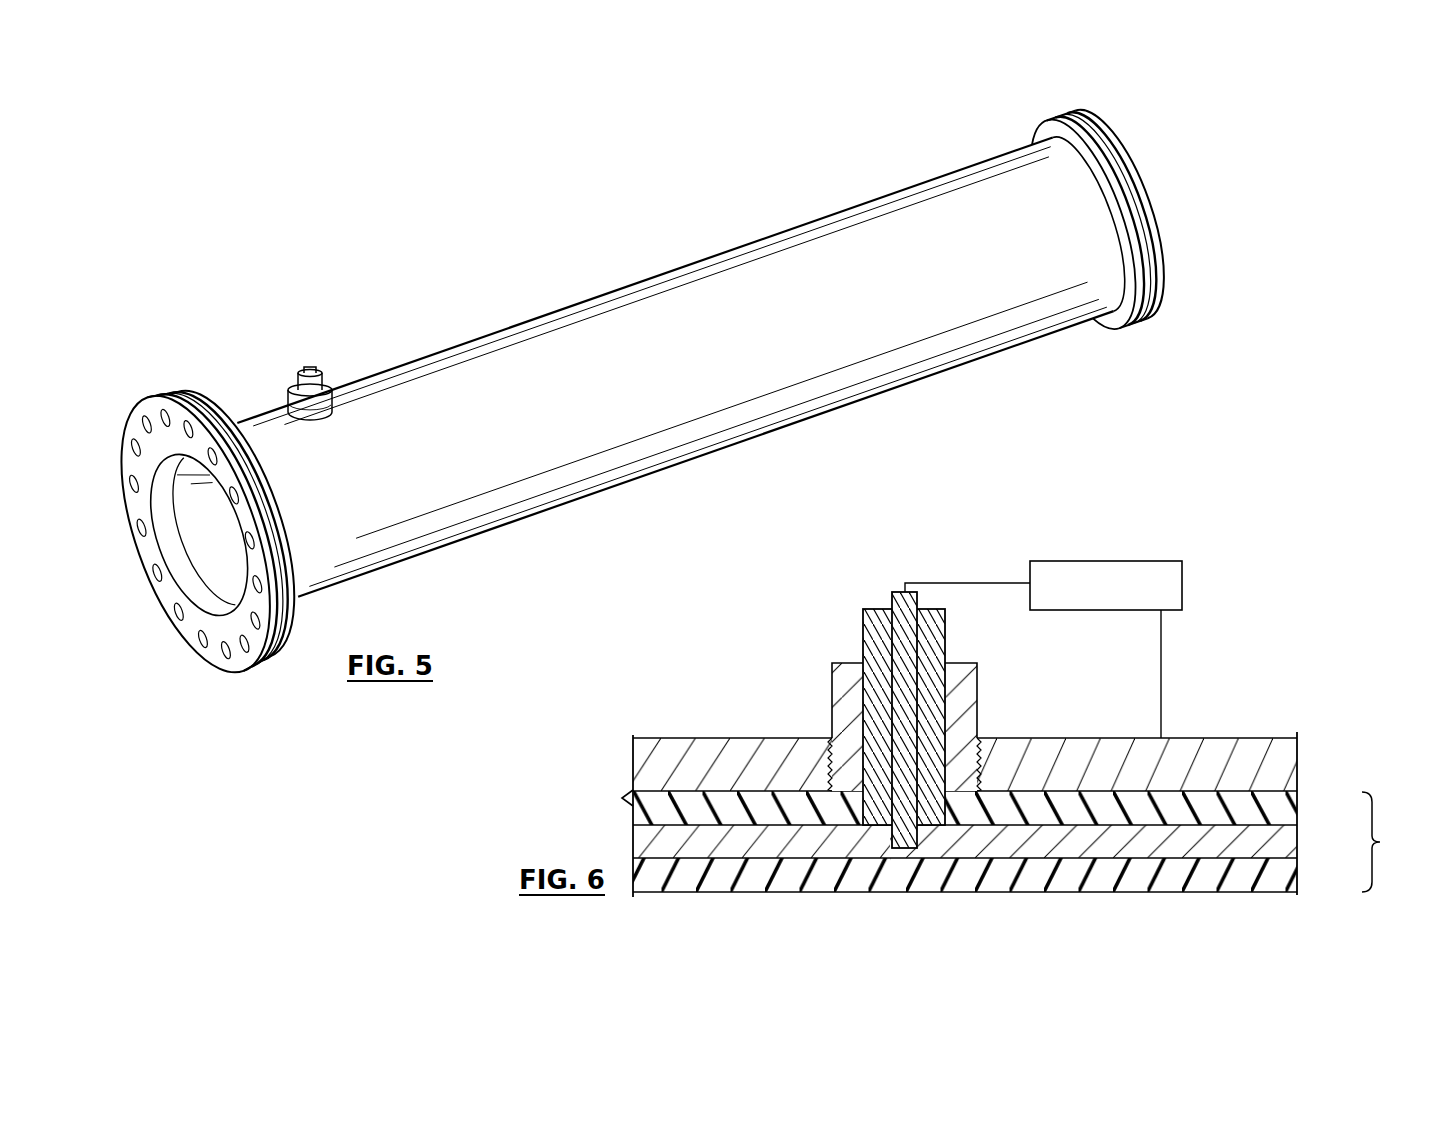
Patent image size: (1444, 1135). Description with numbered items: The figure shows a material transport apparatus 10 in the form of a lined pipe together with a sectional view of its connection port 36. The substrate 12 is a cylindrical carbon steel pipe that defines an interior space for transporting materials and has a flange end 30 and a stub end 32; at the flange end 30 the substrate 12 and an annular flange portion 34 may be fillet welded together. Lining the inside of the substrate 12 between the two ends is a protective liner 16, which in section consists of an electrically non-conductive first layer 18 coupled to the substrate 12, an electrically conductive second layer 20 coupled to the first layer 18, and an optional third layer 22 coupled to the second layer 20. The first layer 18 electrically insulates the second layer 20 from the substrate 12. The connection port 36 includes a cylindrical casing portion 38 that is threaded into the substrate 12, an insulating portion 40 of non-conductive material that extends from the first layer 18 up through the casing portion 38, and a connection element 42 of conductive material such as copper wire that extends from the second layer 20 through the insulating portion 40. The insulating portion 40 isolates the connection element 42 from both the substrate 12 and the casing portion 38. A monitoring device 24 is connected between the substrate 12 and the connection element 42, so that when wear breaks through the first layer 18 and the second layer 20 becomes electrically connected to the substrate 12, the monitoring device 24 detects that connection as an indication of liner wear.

In FIG. 5, the material transport apparatus 10 is at (454, 307).
In FIG. 6, the substrate 12 is at (1285, 752).
In FIG. 6, the protective liner 16 is at (1389, 842).
In FIG. 6, the first layer 18 is at (1286, 800).
In FIG. 6, the second layer 20 is at (1286, 846).
In FIG. 6, the third layer 22 is at (1288, 878).
In FIG. 6, the monitoring device 24 is at (1092, 597).
In FIG. 5, the flange end 30 is at (186, 374).
In FIG. 5, the stub end 32 is at (1040, 98).
In FIG. 5, the annular flange portion 34 is at (268, 652).
In FIG. 5, the connection port 36 is at (320, 362).
In FIG. 6, the connection port 36 is at (873, 652).
In FIG. 6, the casing portion 38 is at (832, 703).
In FIG. 6, the insulating portion 40 is at (863, 637).
In FIG. 6, the connection element 42 is at (894, 599).